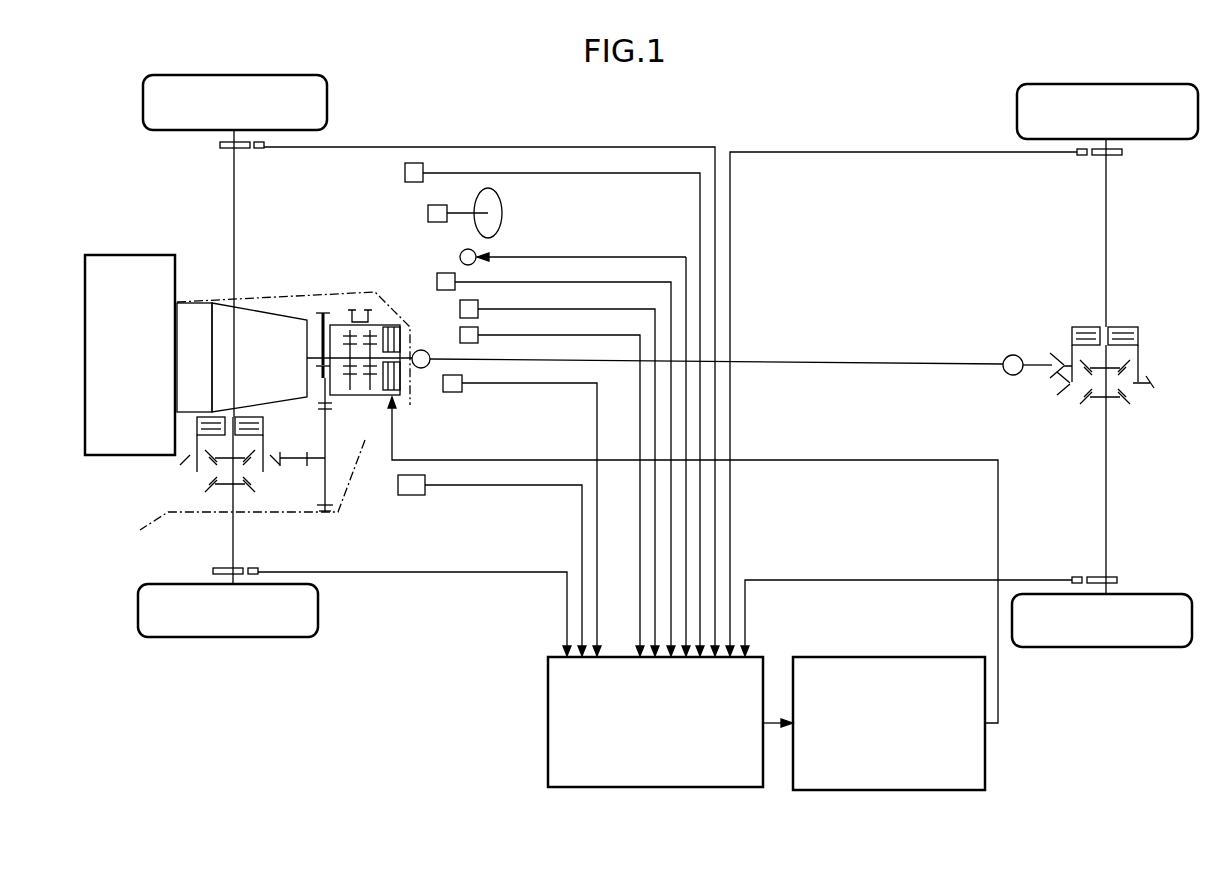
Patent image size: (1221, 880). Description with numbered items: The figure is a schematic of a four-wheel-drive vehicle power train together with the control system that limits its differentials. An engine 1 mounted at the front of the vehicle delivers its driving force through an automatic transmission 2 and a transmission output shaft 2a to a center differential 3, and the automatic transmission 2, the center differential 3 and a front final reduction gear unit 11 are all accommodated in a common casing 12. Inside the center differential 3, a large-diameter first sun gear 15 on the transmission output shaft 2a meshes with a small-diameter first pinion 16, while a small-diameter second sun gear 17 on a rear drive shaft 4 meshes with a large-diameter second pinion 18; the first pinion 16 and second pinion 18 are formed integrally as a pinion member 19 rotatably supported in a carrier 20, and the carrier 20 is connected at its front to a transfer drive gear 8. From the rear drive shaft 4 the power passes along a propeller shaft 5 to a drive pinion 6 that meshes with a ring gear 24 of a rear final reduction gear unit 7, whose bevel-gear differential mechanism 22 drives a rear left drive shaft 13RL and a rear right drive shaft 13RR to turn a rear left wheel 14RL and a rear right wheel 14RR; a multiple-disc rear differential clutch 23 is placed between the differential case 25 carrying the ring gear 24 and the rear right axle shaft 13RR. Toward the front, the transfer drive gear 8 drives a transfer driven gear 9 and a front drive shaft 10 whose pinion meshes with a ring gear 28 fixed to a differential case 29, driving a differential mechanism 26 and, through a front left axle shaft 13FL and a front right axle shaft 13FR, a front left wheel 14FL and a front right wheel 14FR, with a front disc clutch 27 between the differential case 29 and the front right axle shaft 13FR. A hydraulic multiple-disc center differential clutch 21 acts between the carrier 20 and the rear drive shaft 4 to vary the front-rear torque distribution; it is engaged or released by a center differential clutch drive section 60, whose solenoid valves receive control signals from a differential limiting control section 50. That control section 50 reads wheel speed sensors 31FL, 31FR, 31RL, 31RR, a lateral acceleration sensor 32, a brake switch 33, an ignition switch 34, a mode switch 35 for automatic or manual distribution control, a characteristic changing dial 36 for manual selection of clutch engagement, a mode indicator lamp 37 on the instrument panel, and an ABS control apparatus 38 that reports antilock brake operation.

The engine 1 is at (85, 348).
The automatic transmission 2 is at (232, 302).
The transmission output shaft 2a is at (322, 352).
The center differential 3 is at (292, 383).
The rear drive shaft 4 is at (429, 368).
The propeller shaft 5 is at (813, 360).
The drive pinion 6 is at (1037, 362).
The rear final reduction gear unit 7 is at (1128, 342).
The transfer drive gear 8 is at (325, 312).
The transfer driven gear 9 is at (328, 510).
The front drive shaft 10 is at (307, 460).
The front final reduction gear unit 11 is at (291, 500).
The casing 12 is at (228, 495).
The front right axle shaft 13FR is at (233, 176).
The front left axle shaft 13FL is at (232, 561).
The rear right drive shaft 13RR is at (1108, 178).
The rear left drive shaft 13RL is at (1107, 559).
The front right wheel 14FR is at (143, 98).
The front left wheel 14FL is at (205, 638).
The rear right wheel 14RR is at (1017, 108).
The rear left wheel 14RL is at (1130, 648).
The first sun gear 15 is at (339, 445).
The first pinion 16 is at (352, 310).
The second sun gear 17 is at (374, 412).
The second pinion 18 is at (375, 312).
The pinion member 19 is at (368, 311).
The carrier 20 is at (342, 325).
The center differential clutch (transfer clutch) 21 is at (408, 402).
The differential mechanism 22 is at (1136, 409).
The rear differential clutch 23 is at (1128, 366).
The ring gear 24 is at (1155, 384).
The differential case 25 is at (1140, 353).
The differential mechanism 26 is at (197, 500).
The front disc clutch 27 is at (282, 427).
The ring gear 28 is at (198, 477).
The differential case 29 is at (195, 452).
The wheel speed sensor 31FR is at (259, 150).
The wheel speed sensor 31FL is at (255, 566).
The wheel speed sensor 31RR is at (1082, 157).
The wheel speed sensor 31RL is at (1077, 575).
The lateral acceleration sensor 32 is at (450, 393).
The brake switch 33 is at (405, 174).
The ignition switch 34 is at (437, 282).
The mode switch 35 is at (460, 309).
The characteristic changing dial 36 is at (460, 335).
The mode indicator lamp 37 is at (460, 257).
The ABS control apparatus 38 is at (412, 496).
The differential limiting control section 50 is at (548, 760).
The center differential clutch drive section 60 is at (893, 657).